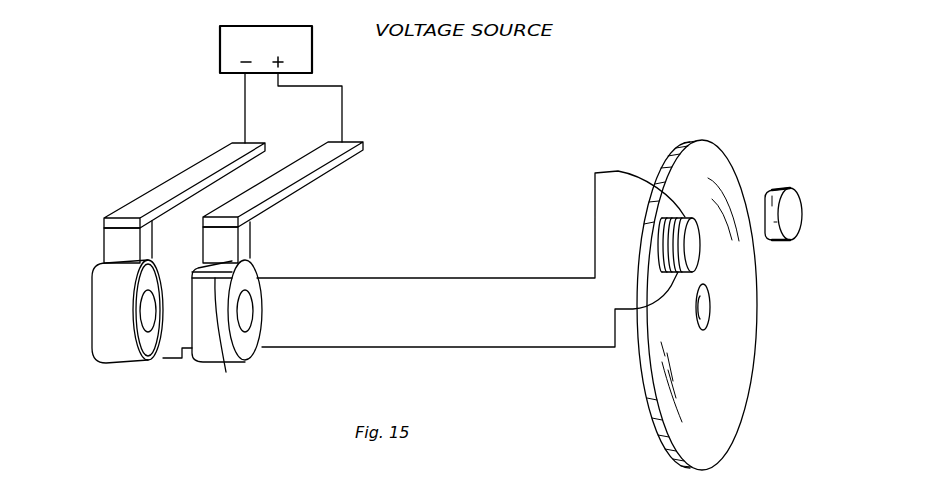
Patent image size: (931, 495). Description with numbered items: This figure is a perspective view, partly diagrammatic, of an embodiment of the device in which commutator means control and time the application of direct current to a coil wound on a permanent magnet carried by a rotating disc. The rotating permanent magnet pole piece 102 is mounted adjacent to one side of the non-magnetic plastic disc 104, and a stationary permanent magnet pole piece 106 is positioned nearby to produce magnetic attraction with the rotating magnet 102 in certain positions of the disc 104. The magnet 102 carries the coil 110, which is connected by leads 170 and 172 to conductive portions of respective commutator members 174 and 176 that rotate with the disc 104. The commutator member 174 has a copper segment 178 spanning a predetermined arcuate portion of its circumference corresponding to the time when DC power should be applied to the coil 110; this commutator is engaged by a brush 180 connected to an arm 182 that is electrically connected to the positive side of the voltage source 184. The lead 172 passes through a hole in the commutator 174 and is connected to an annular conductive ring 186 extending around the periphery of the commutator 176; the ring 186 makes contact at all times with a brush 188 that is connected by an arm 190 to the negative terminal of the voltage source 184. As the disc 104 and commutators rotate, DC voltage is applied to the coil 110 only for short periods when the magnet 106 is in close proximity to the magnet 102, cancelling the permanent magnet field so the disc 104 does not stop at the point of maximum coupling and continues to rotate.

The permanent magnet pole piece 102 is at (694, 255).
The disc 104 is at (664, 398).
The stationary permanent magnet pole piece 106 is at (789, 208).
The coil 110 is at (710, 308).
The lead 170 is at (443, 275).
The lead 172 is at (427, 349).
The commutator member 174 is at (258, 328).
The commutator member 176 is at (92, 323).
The copper segment 178 is at (226, 372).
The brush 180 is at (246, 240).
The arm 182 is at (326, 173).
The voltage source 184 is at (312, 50).
The annular conductive ring 186 is at (143, 358).
The brush 188 is at (120, 244).
The arm 190 is at (205, 170).